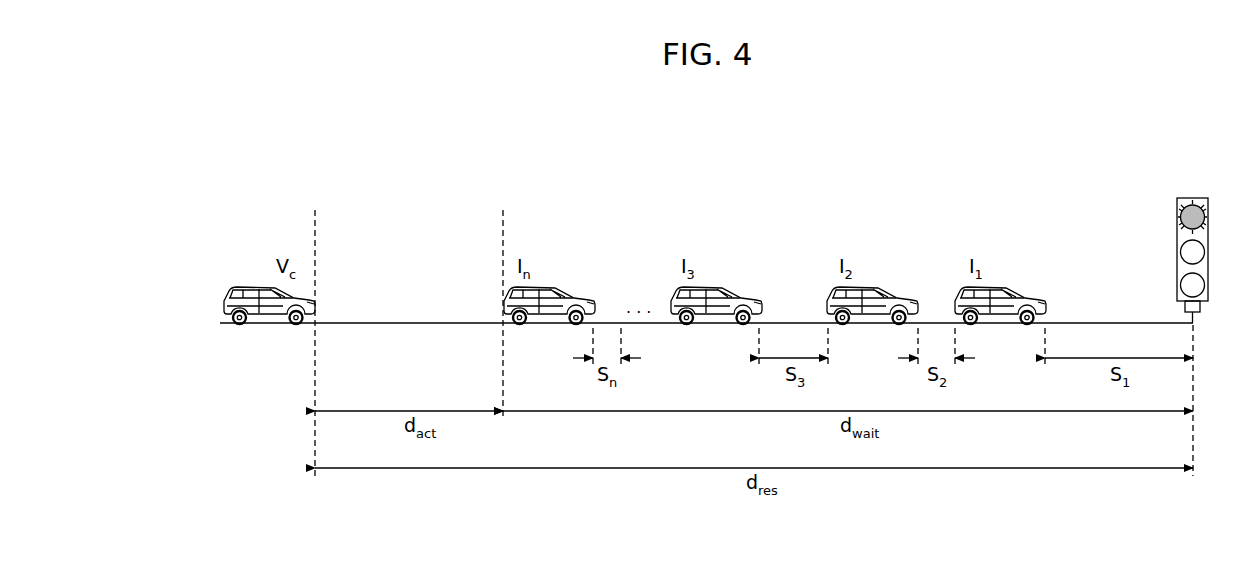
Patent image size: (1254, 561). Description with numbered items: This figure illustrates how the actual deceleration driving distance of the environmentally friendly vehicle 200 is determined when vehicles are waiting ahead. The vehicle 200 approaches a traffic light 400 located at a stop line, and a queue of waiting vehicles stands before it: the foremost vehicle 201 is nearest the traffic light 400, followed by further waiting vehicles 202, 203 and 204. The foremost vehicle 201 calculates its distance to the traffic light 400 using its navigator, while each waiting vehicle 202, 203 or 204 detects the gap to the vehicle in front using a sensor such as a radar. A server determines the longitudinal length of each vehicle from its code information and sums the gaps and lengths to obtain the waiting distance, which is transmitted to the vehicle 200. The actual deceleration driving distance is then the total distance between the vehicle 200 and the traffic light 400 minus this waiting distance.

The environmentally friendly vehicle 200 is at (246, 287).
The foremost vehicle 201 is at (1017, 291).
The waiting vehicle 202 is at (888, 291).
The waiting vehicle 203 is at (731, 291).
The waiting vehicle 204 is at (565, 291).
The traffic light 400 is at (1177, 266).